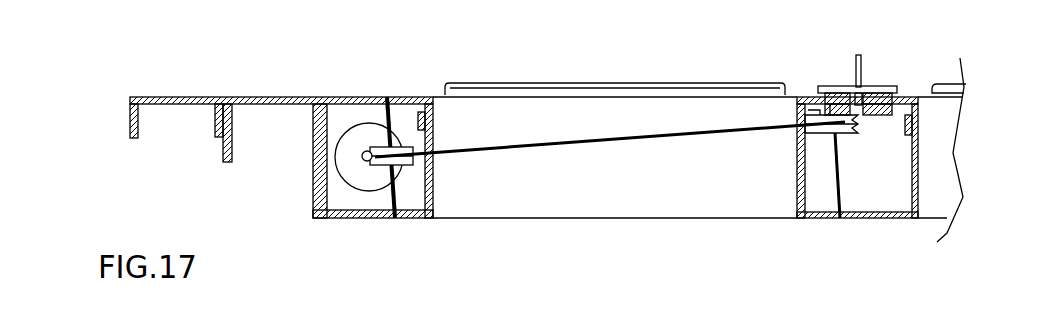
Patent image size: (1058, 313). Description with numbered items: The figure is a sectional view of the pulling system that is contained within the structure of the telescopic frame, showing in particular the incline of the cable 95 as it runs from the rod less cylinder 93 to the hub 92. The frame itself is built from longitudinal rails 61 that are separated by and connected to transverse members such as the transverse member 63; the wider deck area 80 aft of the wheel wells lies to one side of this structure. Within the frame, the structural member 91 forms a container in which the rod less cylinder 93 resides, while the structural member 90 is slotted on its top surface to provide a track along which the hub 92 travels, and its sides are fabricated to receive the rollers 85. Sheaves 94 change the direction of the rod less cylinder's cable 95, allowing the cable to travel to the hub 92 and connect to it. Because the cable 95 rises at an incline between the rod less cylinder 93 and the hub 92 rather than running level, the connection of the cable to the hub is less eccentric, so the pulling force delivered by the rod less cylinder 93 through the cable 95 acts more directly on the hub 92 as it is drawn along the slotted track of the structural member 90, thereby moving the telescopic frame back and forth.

The longitudinal rails 61 is at (285, 98).
The area aft of the wheel wells 80 is at (200, 104).
The structural member 91 is at (370, 98).
The transverse member 63 is at (500, 103).
The rollers 85 is at (610, 83).
The structural member 90 is at (810, 97).
The hub 92 is at (865, 85).
The rod less cylinder 93 is at (363, 178).
The sheaves 94 is at (415, 163).
The cable 95 is at (615, 142).